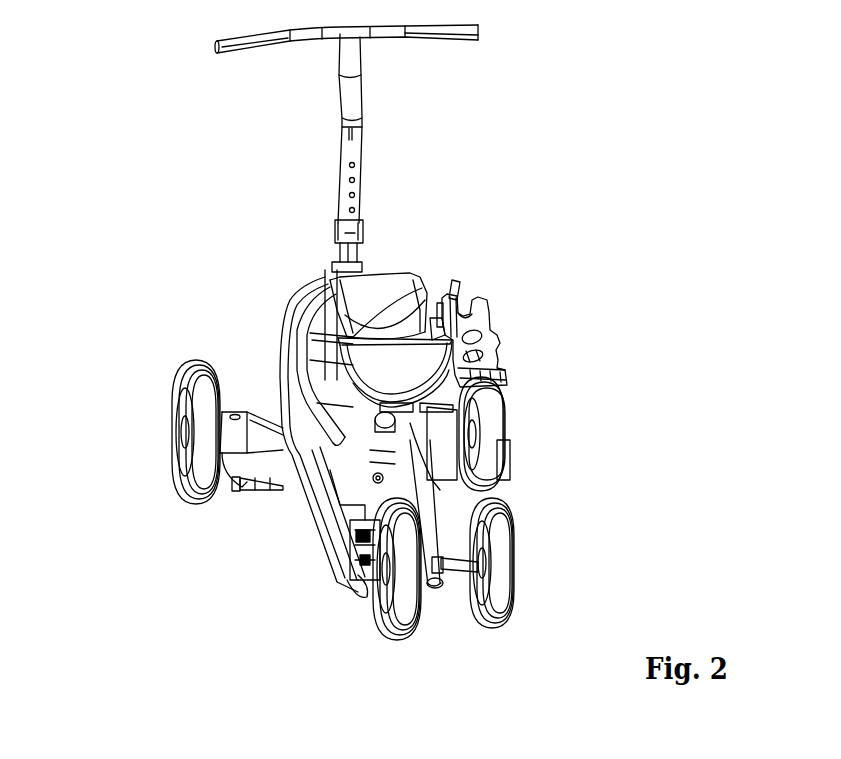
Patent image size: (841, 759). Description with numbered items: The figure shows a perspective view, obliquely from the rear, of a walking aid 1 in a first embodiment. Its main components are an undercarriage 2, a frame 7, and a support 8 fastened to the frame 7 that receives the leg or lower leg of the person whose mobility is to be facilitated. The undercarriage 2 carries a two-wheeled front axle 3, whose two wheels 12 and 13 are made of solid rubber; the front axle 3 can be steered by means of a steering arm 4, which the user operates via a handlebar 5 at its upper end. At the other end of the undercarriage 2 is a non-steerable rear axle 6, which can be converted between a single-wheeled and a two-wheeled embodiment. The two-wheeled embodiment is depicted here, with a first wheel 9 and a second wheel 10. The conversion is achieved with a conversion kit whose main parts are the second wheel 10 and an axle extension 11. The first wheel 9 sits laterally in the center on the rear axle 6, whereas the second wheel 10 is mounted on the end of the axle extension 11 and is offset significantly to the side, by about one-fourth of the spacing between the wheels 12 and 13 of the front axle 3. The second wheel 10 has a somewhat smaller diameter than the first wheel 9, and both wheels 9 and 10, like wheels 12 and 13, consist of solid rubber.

The walking aid 1 is at (545, 247).
The undercarriage 2 is at (232, 507).
The front axle 3 is at (267, 430).
The steering arm 4 is at (430, 40).
The handlebar 5 is at (347, 90).
The rear axle 6 is at (438, 587).
The frame 7 is at (315, 532).
The support 8 is at (400, 258).
The first wheel 9 is at (380, 637).
The second wheel 10 is at (512, 533).
The axle extension 11 is at (458, 578).
The wheel 12 is at (175, 438).
The wheel 13 is at (477, 413).